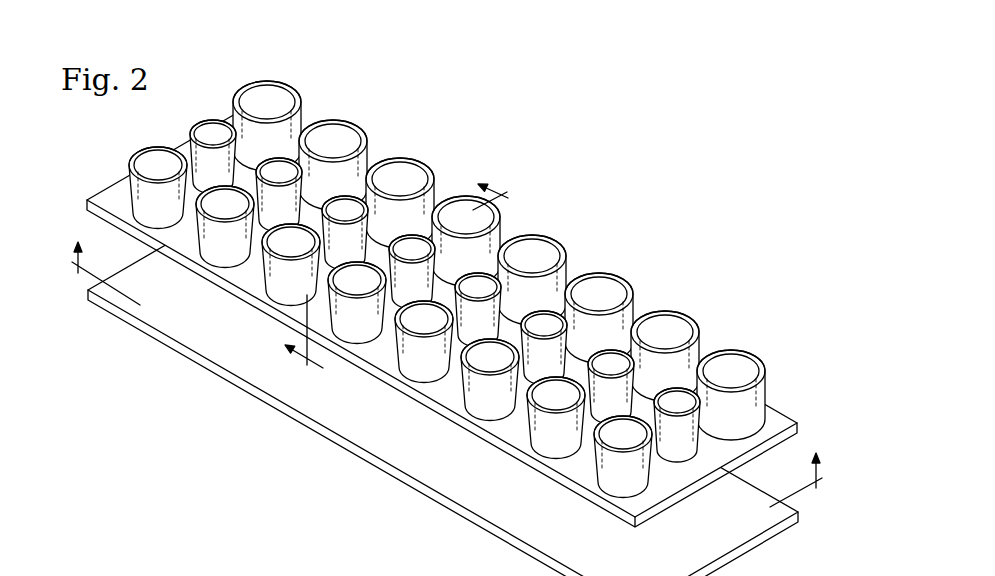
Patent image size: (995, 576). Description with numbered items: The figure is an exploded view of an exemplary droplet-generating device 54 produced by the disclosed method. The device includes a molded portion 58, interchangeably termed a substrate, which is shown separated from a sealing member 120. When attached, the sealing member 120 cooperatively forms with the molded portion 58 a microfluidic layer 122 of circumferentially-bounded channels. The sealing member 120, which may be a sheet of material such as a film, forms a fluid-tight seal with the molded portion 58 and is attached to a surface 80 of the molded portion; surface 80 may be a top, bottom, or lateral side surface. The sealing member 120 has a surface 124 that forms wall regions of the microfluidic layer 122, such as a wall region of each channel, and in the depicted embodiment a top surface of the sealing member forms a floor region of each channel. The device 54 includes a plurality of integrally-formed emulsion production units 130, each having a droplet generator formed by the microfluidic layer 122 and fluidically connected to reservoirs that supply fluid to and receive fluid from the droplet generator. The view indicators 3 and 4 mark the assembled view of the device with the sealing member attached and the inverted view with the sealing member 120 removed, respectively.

The droplet-generating device 54 is at (439, 328).
The molded portion 58 is at (436, 318).
The surface 80 is at (669, 480).
The sealing member 120 is at (432, 386).
The microfluidic layer 122 is at (579, 466).
The surface of sealing member 124 is at (78, 292).
The emulsion production unit 130 is at (622, 274).
The section line 3- 3 is at (387, 265).
The section line 4- 4 is at (446, 362).